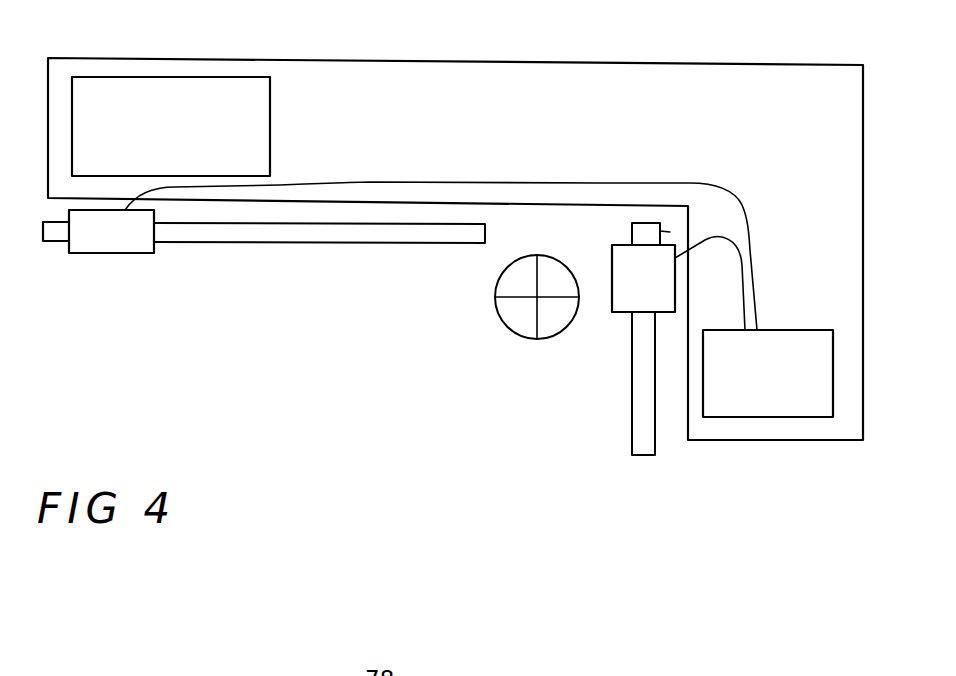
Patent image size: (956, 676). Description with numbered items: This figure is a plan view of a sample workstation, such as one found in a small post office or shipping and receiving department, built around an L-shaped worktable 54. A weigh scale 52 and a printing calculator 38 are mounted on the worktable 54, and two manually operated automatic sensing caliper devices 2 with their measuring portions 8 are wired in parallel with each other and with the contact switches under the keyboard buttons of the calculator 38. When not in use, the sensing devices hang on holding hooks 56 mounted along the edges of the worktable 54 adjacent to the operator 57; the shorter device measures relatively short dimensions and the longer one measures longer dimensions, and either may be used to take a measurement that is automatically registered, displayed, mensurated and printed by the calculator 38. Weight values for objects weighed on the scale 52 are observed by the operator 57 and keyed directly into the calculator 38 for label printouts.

The container station 2 is at (112, 253).
The conveyor 8 is at (261, 243).
The printing calculator 38 is at (780, 400).
The weigh scale 52 is at (173, 162).
The L-shaped worktable 54 is at (700, 440).
The holding hooks 56 is at (198, 202).
The operator 57 is at (502, 318).